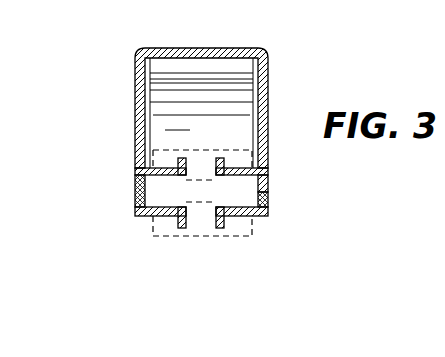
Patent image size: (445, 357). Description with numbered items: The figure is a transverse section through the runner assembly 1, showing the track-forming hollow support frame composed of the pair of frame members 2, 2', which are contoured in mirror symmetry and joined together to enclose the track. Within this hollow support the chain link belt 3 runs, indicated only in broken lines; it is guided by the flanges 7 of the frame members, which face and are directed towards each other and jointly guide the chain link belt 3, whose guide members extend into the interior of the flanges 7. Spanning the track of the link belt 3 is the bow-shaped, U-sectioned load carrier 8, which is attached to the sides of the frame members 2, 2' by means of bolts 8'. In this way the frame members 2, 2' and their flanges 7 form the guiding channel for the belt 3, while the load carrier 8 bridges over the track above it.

The runner assembly 1 is at (212, 155).
The load carrier 8 is at (217, 120).
The bolts 8' is at (278, 214).
The frame member 2 is at (260, 214).
The frame member 2' is at (136, 207).
The chain link belt 3 is at (241, 152).
The flanges 7 is at (183, 158).